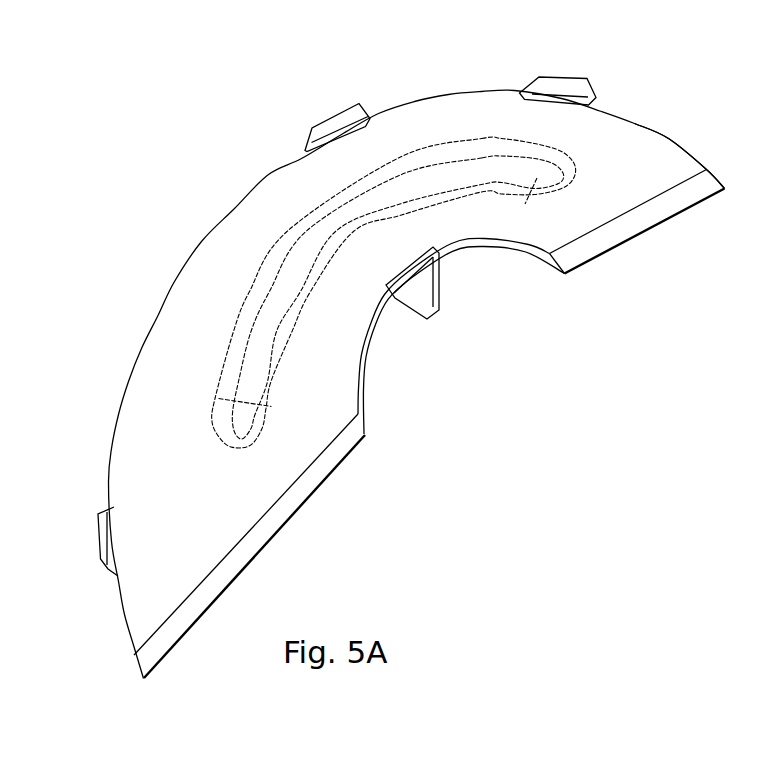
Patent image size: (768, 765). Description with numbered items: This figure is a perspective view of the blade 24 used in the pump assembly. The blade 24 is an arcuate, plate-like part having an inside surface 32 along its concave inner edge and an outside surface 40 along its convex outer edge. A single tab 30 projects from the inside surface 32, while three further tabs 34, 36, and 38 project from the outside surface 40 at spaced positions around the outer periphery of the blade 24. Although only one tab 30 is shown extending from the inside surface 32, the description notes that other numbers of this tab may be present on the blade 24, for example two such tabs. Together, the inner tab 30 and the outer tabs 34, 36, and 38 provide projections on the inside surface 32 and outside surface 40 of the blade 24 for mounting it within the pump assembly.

The blade 24 is at (182, 488).
The tab 30 is at (434, 302).
The inside surface 32 is at (360, 356).
The tab 34 is at (566, 82).
The tab 36 is at (334, 100).
The tab 38 is at (88, 530).
The outside surface 40 is at (672, 132).